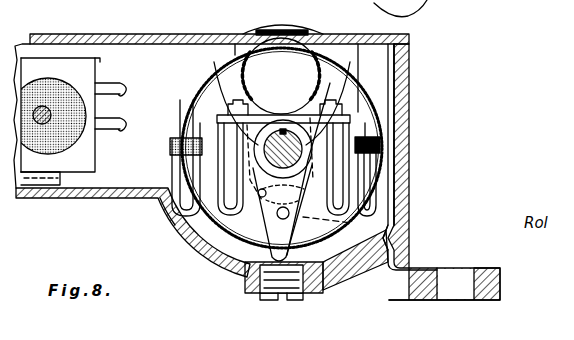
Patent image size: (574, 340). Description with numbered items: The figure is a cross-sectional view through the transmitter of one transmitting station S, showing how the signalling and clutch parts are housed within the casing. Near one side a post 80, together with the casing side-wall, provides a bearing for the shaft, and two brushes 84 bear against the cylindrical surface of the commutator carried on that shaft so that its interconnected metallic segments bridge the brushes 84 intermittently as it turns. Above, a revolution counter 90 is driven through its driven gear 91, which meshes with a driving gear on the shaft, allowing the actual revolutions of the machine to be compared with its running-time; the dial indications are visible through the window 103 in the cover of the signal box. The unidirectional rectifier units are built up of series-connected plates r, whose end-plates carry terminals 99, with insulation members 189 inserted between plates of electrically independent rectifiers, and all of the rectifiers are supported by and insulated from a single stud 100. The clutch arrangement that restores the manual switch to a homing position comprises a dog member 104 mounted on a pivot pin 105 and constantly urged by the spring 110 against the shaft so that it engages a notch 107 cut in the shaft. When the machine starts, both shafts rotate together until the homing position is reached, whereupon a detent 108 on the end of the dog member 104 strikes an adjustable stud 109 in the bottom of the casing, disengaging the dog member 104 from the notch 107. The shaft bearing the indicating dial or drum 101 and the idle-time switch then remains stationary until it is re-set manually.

The insulation members 189 is at (35, 75).
The series-connected plates r is at (100, 62).
The terminals 99 is at (128, 126).
The stud 100 is at (50, 122).
The post 80 is at (208, 100).
The brushes 84 is at (215, 88).
The driven gear 91 is at (235, 44).
The window 103 is at (280, 42).
The revolution counter 90 is at (285, 30).
The dog member 104 is at (358, 80).
The notch 107 is at (282, 120).
The transmitting station S is at (410, 100).
The spring 110 is at (400, 222).
The indicating dial or drum 101 is at (172, 205).
The pivot pin 105 is at (337, 268).
The detent 108 is at (240, 272).
The adjustable stud 109 is at (292, 300).